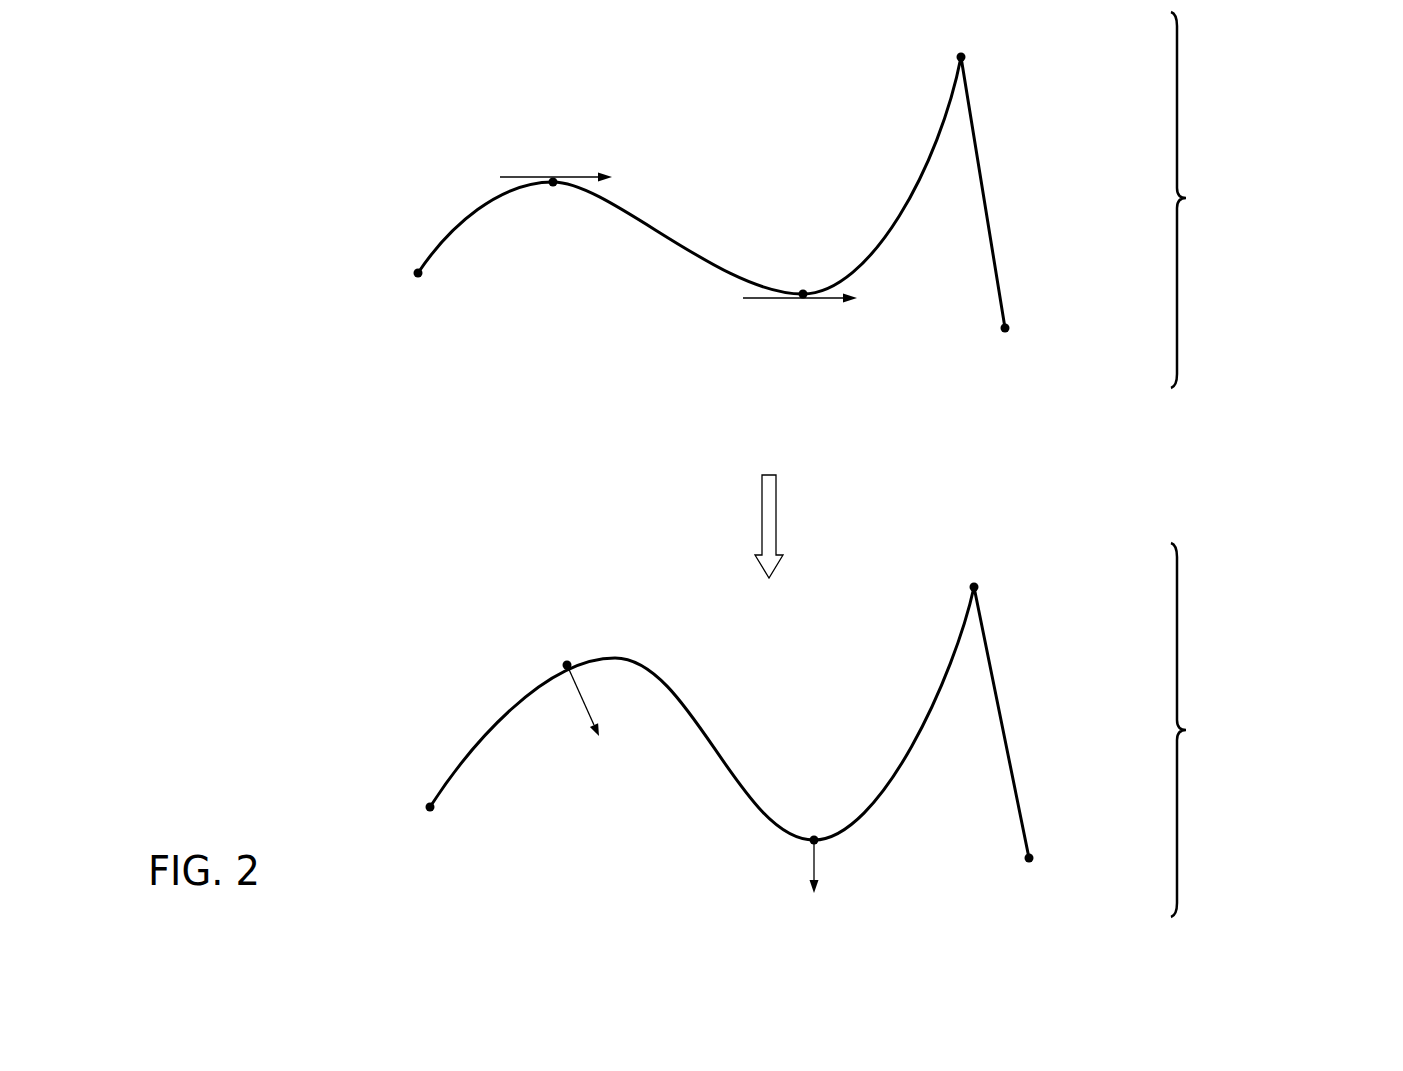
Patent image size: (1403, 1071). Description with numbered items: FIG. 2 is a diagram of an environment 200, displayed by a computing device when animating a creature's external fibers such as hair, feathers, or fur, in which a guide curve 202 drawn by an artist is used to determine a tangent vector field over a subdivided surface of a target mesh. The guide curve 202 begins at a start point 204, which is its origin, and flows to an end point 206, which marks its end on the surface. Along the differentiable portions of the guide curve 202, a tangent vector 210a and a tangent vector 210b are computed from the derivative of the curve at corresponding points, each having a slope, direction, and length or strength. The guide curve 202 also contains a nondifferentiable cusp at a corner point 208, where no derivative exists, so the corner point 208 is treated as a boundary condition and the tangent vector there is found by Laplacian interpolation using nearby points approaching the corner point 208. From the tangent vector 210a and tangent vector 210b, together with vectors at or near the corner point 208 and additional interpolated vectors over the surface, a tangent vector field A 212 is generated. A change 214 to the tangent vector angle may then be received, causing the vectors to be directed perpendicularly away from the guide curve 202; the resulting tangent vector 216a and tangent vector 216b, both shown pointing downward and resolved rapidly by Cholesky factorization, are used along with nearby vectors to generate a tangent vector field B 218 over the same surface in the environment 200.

The environment 200 is at (320, 61).
The guide curve 202 is at (658, 228).
The start point 204 is at (408, 273).
The end point 206 is at (1016, 330).
The corner point 208 is at (975, 580).
The tangent vector 210a is at (520, 176).
The tangent vector 210b is at (825, 301).
The tangent vector field A 212 is at (1263, 200).
The change 214 is at (761, 515).
The tangent vector 216a is at (582, 702).
The tangent vector 216b is at (818, 868).
The tangent vector field B 218 is at (1263, 730).